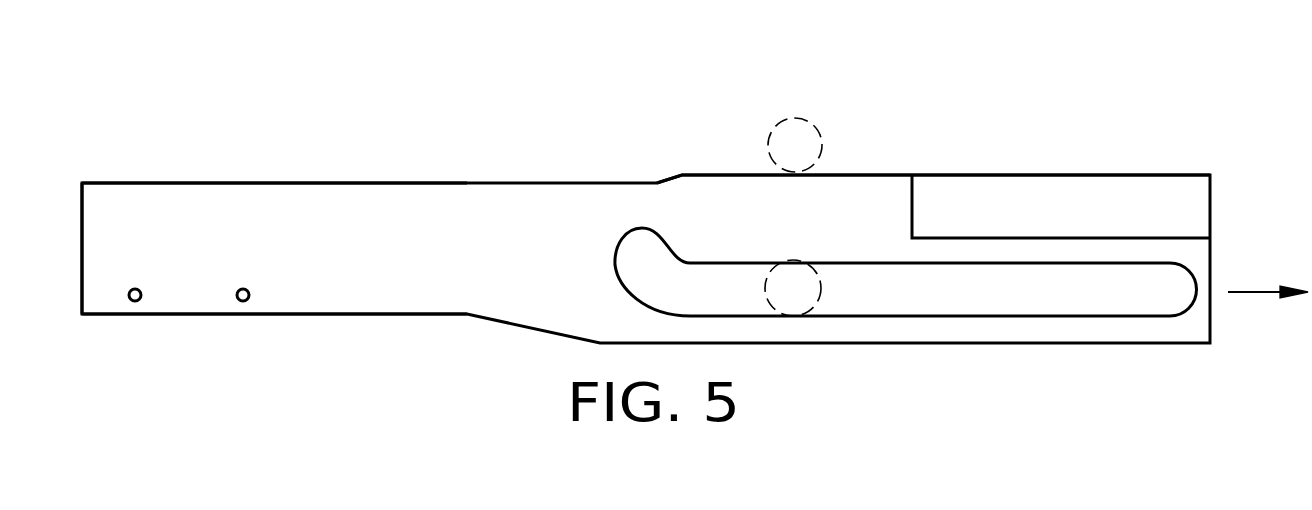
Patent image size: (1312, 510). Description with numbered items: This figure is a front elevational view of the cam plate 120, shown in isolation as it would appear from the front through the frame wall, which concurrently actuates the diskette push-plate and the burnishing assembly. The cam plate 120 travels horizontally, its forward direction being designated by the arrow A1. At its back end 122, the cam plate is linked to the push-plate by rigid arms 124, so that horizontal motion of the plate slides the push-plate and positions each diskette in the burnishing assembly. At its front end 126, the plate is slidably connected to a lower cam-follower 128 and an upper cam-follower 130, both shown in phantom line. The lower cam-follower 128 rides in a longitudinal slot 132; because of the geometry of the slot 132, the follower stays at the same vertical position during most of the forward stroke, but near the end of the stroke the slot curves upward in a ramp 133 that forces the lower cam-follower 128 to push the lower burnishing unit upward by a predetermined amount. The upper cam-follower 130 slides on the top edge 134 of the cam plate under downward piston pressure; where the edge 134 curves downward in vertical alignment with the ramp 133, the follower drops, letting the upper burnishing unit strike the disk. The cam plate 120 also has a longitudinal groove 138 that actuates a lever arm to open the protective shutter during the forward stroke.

The cam plate 120 is at (1092, 125).
The back end 122 is at (105, 210).
The rigid arms 124 is at (244, 301).
The front end 126 is at (878, 188).
The lower cam-follower 128 is at (797, 296).
The upper cam-follower 130 is at (803, 124).
The longitudinal slot 132 is at (1158, 305).
The ramp 133 is at (636, 247).
The top edge 134 is at (1005, 175).
The longitudinal groove 138 is at (1157, 193).
The arrow A1 is at (1250, 291).